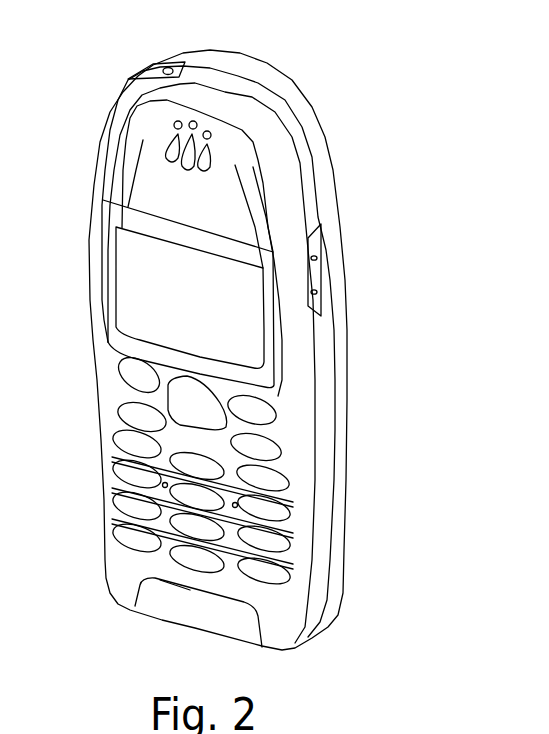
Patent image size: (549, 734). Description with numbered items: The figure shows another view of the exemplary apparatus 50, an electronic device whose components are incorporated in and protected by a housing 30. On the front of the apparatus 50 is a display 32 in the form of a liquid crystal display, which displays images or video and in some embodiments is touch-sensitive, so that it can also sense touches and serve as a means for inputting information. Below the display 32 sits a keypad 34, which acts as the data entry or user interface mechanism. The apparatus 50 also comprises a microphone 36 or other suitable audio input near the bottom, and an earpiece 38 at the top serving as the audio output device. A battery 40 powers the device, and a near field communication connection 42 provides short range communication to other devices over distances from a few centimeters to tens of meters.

The housing 30 is at (327, 180).
The display 32 is at (247, 338).
The keypad 34 is at (261, 574).
The microphone 36 is at (150, 603).
The earpiece 38 is at (170, 145).
The battery 40 is at (345, 564).
The near field communication (NFC) connection 42 is at (210, 77).
The apparatus 50 is at (302, 60).